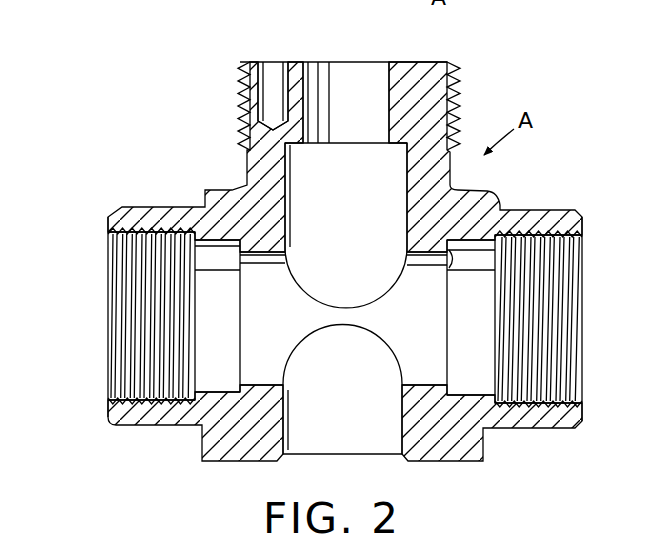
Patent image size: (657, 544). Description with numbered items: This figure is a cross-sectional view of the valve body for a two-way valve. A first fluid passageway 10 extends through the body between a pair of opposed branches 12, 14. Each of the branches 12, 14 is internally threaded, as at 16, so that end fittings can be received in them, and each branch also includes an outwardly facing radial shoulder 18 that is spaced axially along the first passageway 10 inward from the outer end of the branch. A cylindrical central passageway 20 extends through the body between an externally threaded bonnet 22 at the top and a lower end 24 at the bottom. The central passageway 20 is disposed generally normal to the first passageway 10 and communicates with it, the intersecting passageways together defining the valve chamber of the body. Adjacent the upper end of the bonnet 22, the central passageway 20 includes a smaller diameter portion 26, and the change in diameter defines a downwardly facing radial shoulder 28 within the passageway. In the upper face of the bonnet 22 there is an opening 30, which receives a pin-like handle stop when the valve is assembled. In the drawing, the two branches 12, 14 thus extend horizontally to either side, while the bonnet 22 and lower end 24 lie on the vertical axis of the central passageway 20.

The first fluid passageway 10 is at (258, 382).
The branch 12 is at (100, 262).
The branch 14 is at (592, 277).
The internal threads 16 is at (540, 395).
The outwardly facing radial shoulder 18 is at (453, 253).
The central passageway 20 is at (288, 223).
The bonnet 22 is at (412, 78).
The lower end 24 is at (448, 461).
The smaller diameter portion 26 is at (301, 93).
The downwardly facing radial shoulder 28 is at (293, 148).
The opening 30 is at (266, 68).